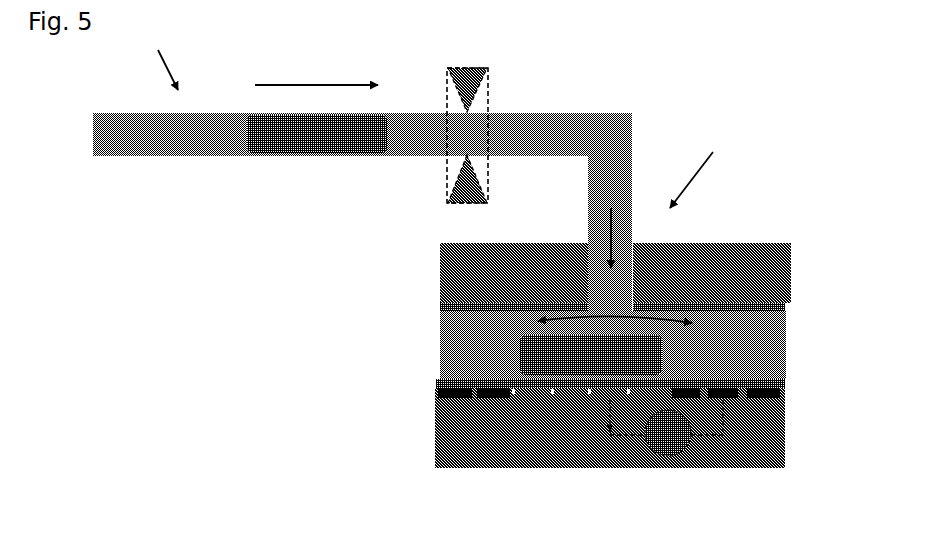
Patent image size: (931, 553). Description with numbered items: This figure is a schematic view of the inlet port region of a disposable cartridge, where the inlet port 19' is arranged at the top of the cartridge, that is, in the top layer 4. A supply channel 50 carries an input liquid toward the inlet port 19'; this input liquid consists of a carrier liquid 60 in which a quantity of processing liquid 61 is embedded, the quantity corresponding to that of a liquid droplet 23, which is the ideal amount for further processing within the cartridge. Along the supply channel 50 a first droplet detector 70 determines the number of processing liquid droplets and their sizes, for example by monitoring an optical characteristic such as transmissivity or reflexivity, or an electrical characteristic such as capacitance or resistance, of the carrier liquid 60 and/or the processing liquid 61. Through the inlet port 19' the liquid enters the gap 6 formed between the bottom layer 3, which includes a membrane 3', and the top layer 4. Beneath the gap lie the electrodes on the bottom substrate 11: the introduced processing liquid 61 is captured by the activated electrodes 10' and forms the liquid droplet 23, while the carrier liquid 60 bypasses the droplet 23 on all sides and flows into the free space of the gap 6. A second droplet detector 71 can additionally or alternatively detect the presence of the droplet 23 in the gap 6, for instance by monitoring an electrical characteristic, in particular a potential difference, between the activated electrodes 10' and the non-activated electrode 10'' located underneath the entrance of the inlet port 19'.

The supply channel 50 is at (157, 56).
The processing liquid 61 is at (316, 66).
The droplet detector 70 is at (457, 67).
The carrier liquid 60 is at (562, 130).
The liquid droplet 23 is at (278, 150).
The inlet port 19' is at (703, 163).
The top layer 4 is at (460, 275).
The gap between 3 and 4 6 is at (709, 359).
The bottom layer 3 is at (537, 404).
The membrane 3' is at (537, 404).
The bottom substrate 11 is at (753, 438).
The activated electrode 10' is at (489, 460).
The non-activated electrode 10'' is at (727, 464).
The droplet detector 71 is at (670, 457).